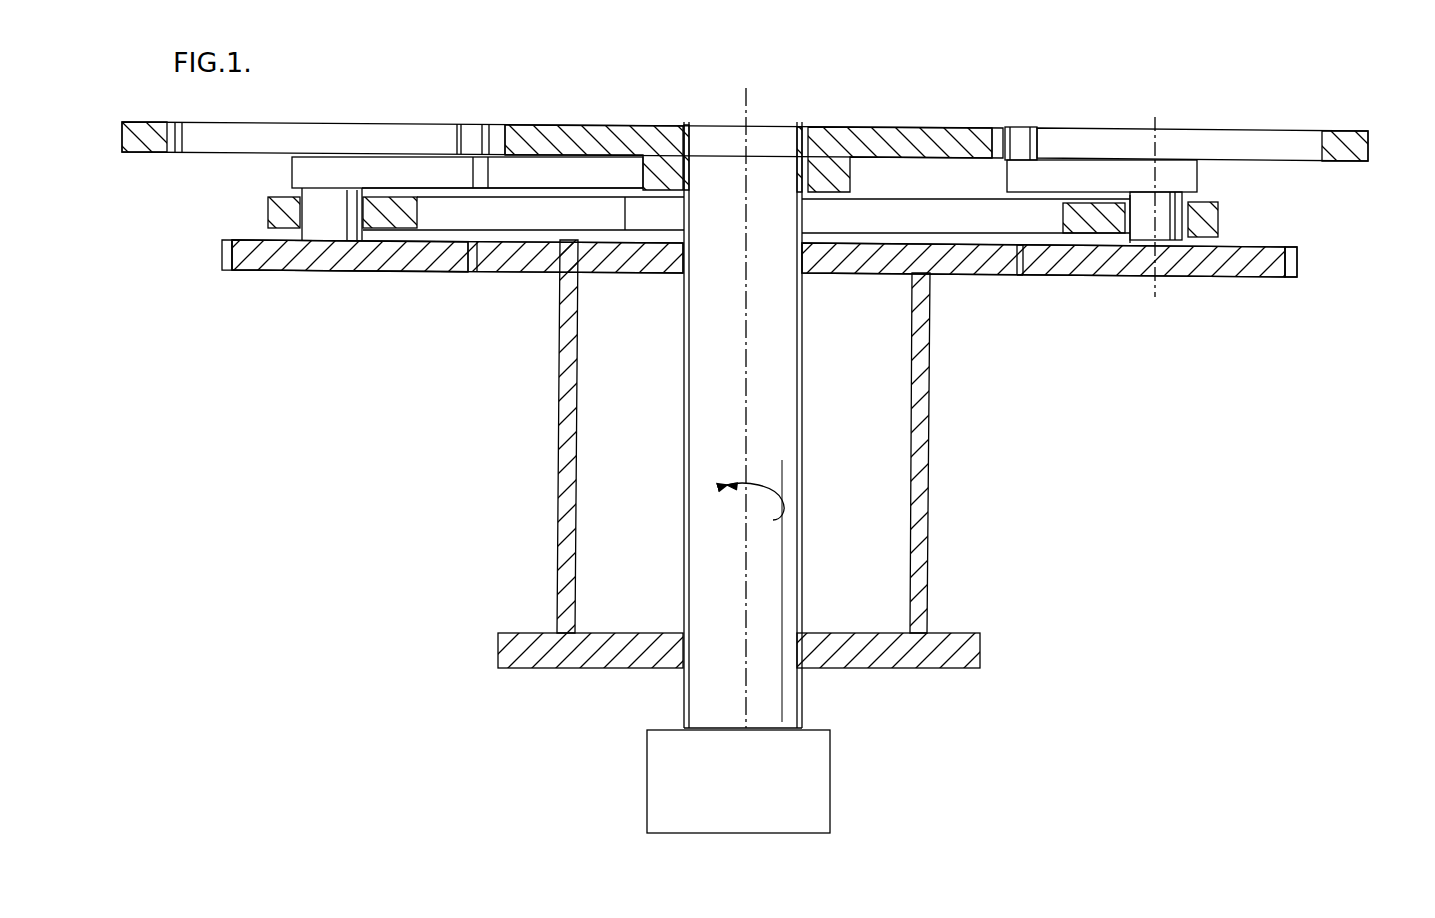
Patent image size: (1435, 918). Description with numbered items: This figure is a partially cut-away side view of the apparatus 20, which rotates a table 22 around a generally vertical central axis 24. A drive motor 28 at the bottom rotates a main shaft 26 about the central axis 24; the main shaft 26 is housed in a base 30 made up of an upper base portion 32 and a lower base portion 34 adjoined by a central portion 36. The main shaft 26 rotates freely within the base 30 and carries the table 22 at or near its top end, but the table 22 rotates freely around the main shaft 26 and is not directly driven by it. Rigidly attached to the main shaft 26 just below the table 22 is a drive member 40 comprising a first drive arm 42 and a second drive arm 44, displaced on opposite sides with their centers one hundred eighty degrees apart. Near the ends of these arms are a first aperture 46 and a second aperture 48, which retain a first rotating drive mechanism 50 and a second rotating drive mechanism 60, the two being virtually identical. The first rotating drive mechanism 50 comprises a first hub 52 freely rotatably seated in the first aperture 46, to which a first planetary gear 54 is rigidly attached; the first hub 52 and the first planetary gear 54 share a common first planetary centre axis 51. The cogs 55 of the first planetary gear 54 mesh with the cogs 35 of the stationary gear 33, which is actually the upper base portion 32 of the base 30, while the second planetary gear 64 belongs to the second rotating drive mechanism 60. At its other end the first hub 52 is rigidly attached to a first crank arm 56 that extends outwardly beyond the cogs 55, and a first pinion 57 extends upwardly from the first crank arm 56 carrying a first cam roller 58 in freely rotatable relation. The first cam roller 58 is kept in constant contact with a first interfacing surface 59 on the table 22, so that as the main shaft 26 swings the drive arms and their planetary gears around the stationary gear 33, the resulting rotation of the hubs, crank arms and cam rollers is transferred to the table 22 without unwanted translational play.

The apparatus 20 is at (356, 437).
The table 22 is at (515, 125).
The central axis 24 is at (742, 693).
The main shaft 26 is at (717, 140).
The drive motor 28 is at (755, 811).
The base 30 is at (518, 515).
The upper base portion 32 is at (612, 272).
The stationary gear 33 is at (1015, 275).
The lower base portion 34 is at (527, 668).
The cogs 35 is at (1012, 263).
The central portion 36 is at (560, 365).
The drive member 40 is at (870, 323).
The first drive arm 42 is at (903, 207).
The second drive arm 44 is at (560, 225).
The first aperture 46 is at (1217, 217).
The second aperture 48 is at (380, 262).
The first rotating drive mechanism 50 is at (1312, 247).
The first planetary centre axis 51 is at (1155, 293).
The first hub 52 is at (1173, 210).
The first planetary gear 54 is at (1218, 270).
The cogs 55 is at (1296, 278).
The first crank arm 56 is at (1203, 178).
The first pinion 57 is at (995, 162).
The first cam roller 58 is at (1018, 135).
The first interfacing surface 59 is at (1128, 145).
The second rotating drive mechanism 60 is at (203, 242).
The second planetary gear 64 is at (300, 262).